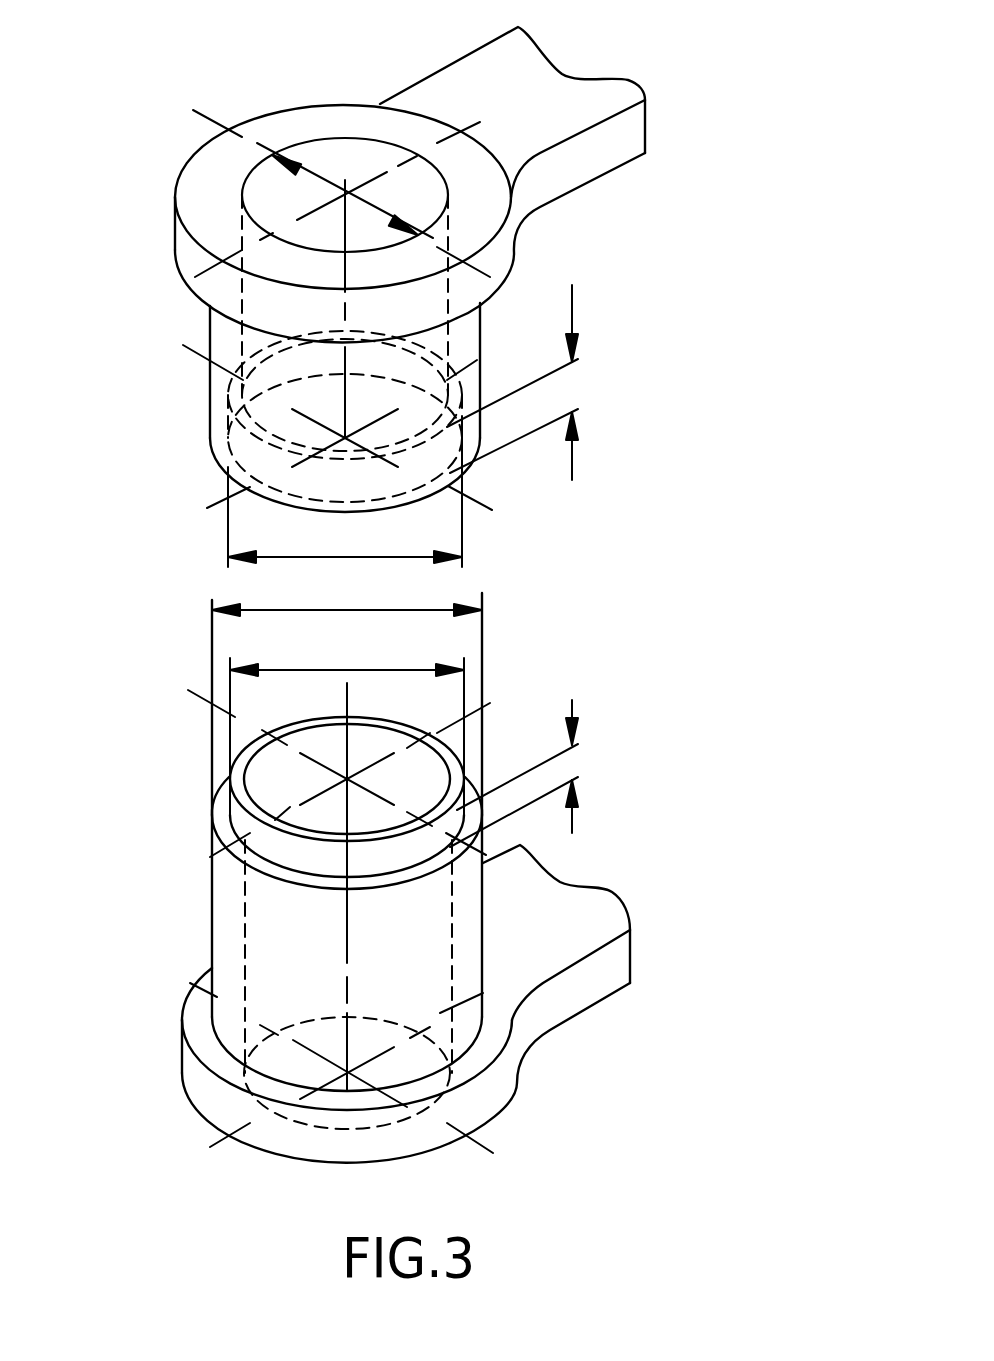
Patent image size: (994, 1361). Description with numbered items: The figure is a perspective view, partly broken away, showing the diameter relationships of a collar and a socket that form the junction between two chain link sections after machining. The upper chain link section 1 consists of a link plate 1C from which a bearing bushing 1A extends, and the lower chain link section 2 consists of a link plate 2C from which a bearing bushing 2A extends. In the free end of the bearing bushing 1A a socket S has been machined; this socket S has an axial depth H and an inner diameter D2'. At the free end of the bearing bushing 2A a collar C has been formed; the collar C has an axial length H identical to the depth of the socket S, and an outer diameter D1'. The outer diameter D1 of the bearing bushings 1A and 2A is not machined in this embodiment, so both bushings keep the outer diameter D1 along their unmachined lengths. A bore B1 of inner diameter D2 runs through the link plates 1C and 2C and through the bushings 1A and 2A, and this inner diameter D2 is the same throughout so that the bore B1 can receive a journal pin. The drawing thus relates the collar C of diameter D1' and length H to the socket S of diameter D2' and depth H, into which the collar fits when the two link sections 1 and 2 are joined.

The chain link section 1 is at (648, 221).
The bearing bushing 1A is at (212, 352).
The link plate 1C is at (452, 87).
The bore B1 is at (273, 190).
The inner diameter of bore D2 is at (345, 142).
The inner diameter of socket D2' is at (345, 497).
The socket S is at (207, 458).
The axial depth H is at (531, 566).
The outer diameter of bearing bushing D1 is at (347, 589).
The outer diameter of collar D1' is at (347, 716).
The chain link section 2 is at (671, 849).
The bearing bushing 2A is at (225, 905).
The link plate 2C is at (567, 1002).
The collar C is at (307, 712).